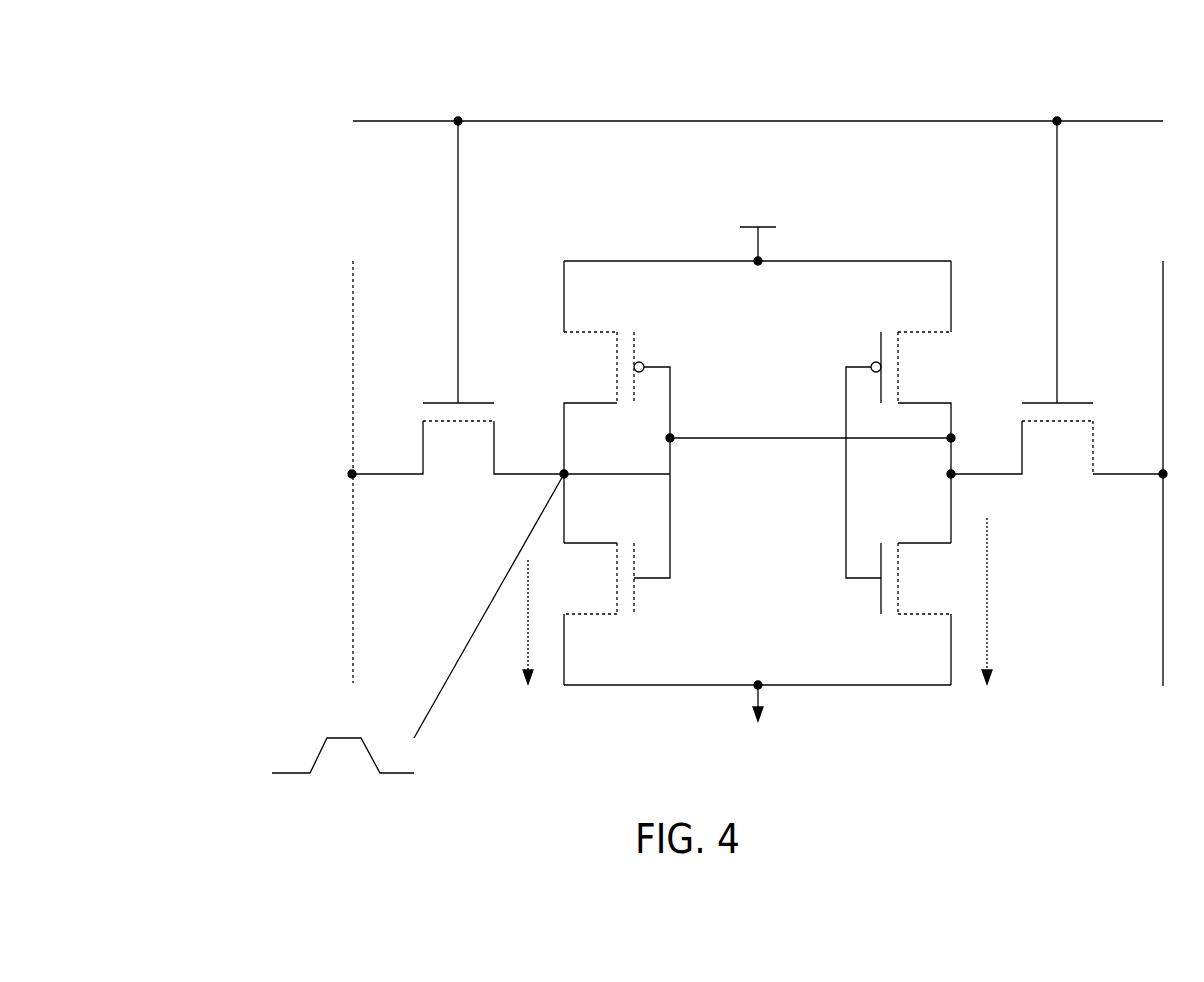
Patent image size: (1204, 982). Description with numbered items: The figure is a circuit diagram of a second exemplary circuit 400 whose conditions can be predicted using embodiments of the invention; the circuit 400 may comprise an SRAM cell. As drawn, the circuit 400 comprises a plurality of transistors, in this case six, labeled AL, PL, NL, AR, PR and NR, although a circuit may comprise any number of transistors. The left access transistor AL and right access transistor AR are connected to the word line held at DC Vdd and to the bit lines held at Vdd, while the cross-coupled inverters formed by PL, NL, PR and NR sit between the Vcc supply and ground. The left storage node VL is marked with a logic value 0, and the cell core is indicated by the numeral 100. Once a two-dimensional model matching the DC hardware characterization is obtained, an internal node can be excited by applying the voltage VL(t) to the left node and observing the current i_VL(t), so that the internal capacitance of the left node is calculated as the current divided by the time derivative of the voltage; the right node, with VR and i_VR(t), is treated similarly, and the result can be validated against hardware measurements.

The second exemplary circuit 400 is at (388, 102).
The SRAM memory cell 100 is at (282, 262).
The stored logic value at node VL 0 is at (615, 461).